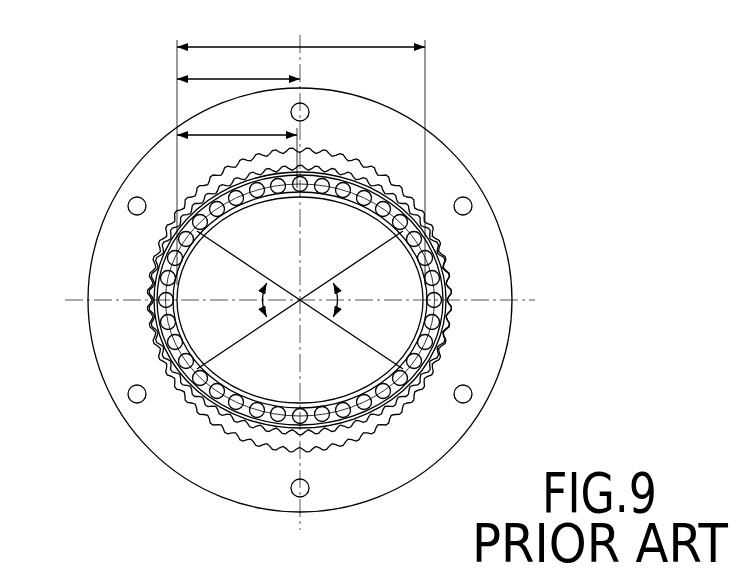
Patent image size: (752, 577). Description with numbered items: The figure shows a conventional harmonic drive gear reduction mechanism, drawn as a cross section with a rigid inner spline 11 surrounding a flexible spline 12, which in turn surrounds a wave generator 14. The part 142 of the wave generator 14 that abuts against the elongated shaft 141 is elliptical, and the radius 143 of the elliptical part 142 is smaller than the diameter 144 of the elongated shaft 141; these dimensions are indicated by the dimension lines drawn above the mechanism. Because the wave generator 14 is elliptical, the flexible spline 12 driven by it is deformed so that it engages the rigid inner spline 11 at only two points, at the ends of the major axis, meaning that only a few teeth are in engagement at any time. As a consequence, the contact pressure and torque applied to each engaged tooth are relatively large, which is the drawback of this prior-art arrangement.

The rigid inner spline 11 is at (488, 275).
The flexible spline 12 is at (452, 252).
The wave generator 14 is at (392, 327).
The elongated shaft 141 is at (301, 154).
The part of the wave generator 142 is at (150, 308).
The radius 143 is at (237, 148).
The diameter 144 is at (238, 66).